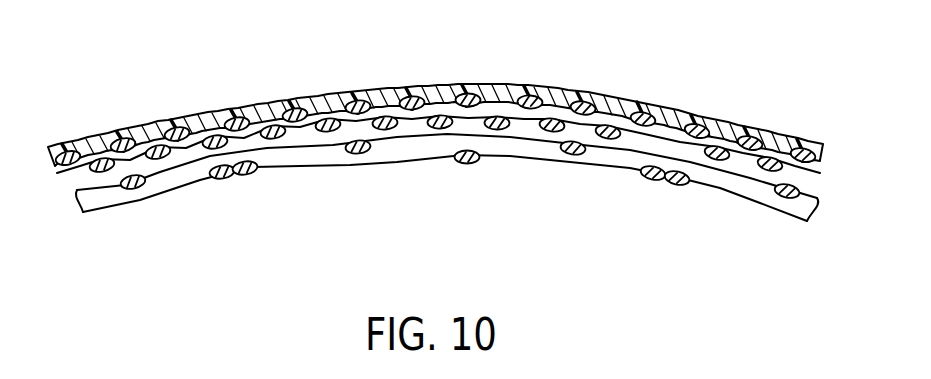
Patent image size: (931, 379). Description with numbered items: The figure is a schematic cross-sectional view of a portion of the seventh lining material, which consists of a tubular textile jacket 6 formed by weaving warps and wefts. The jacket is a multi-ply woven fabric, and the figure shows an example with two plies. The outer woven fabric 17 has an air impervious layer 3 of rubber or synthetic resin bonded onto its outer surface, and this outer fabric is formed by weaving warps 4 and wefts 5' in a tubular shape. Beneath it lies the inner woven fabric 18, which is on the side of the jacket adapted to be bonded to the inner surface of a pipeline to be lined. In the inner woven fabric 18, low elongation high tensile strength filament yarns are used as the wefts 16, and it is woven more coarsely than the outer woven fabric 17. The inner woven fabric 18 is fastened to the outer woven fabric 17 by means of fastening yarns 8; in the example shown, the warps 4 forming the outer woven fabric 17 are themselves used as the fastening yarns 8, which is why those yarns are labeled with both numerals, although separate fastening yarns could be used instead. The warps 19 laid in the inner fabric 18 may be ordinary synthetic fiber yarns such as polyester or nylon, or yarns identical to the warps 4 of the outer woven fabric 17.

The air impervious layer 3 is at (445, 92).
The warps 4 is at (523, 92).
The wefts 5' is at (433, 93).
The tubular textile jacket 6 is at (52, 167).
The fastening yarns 8 is at (221, 178).
The wefts 16 is at (397, 150).
The outer woven fabric 17 is at (826, 162).
The inner woven fabric 18 is at (818, 202).
The warps 19 is at (470, 163).